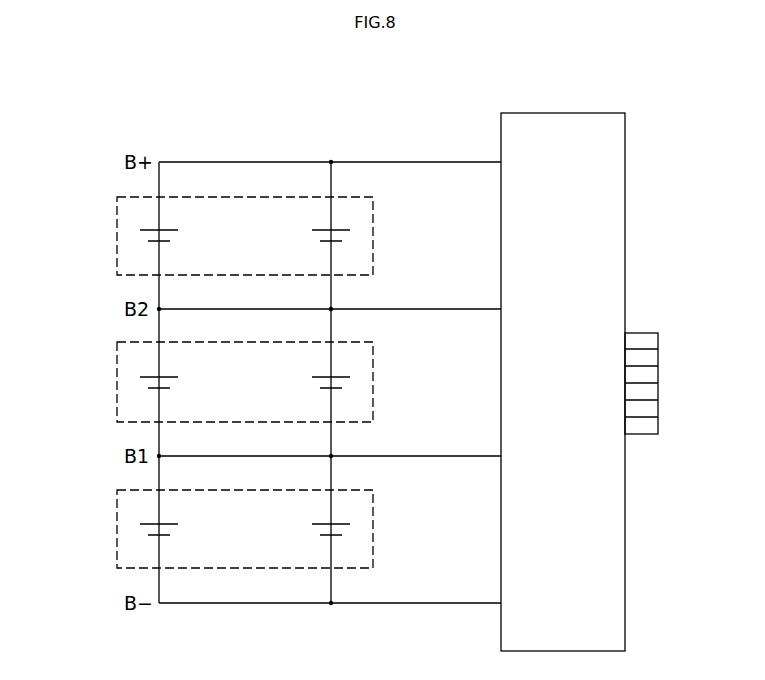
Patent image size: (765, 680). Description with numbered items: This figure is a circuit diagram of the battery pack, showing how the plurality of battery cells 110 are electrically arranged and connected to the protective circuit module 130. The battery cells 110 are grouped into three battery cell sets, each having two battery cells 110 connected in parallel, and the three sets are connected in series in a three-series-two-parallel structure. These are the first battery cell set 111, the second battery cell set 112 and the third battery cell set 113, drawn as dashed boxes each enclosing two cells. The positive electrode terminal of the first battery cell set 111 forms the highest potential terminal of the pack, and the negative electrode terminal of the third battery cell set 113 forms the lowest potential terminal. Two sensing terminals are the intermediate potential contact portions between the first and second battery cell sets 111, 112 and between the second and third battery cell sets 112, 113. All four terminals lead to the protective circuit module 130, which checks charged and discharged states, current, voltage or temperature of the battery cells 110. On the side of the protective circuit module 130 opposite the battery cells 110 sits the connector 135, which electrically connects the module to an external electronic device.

The battery cell 110 is at (185, 237).
The first battery cell set 111 is at (117, 233).
The second battery cell set 112 is at (117, 378).
The third battery cell set 113 is at (117, 525).
The protective circuit module 130 is at (560, 113).
The connector 135 is at (658, 343).